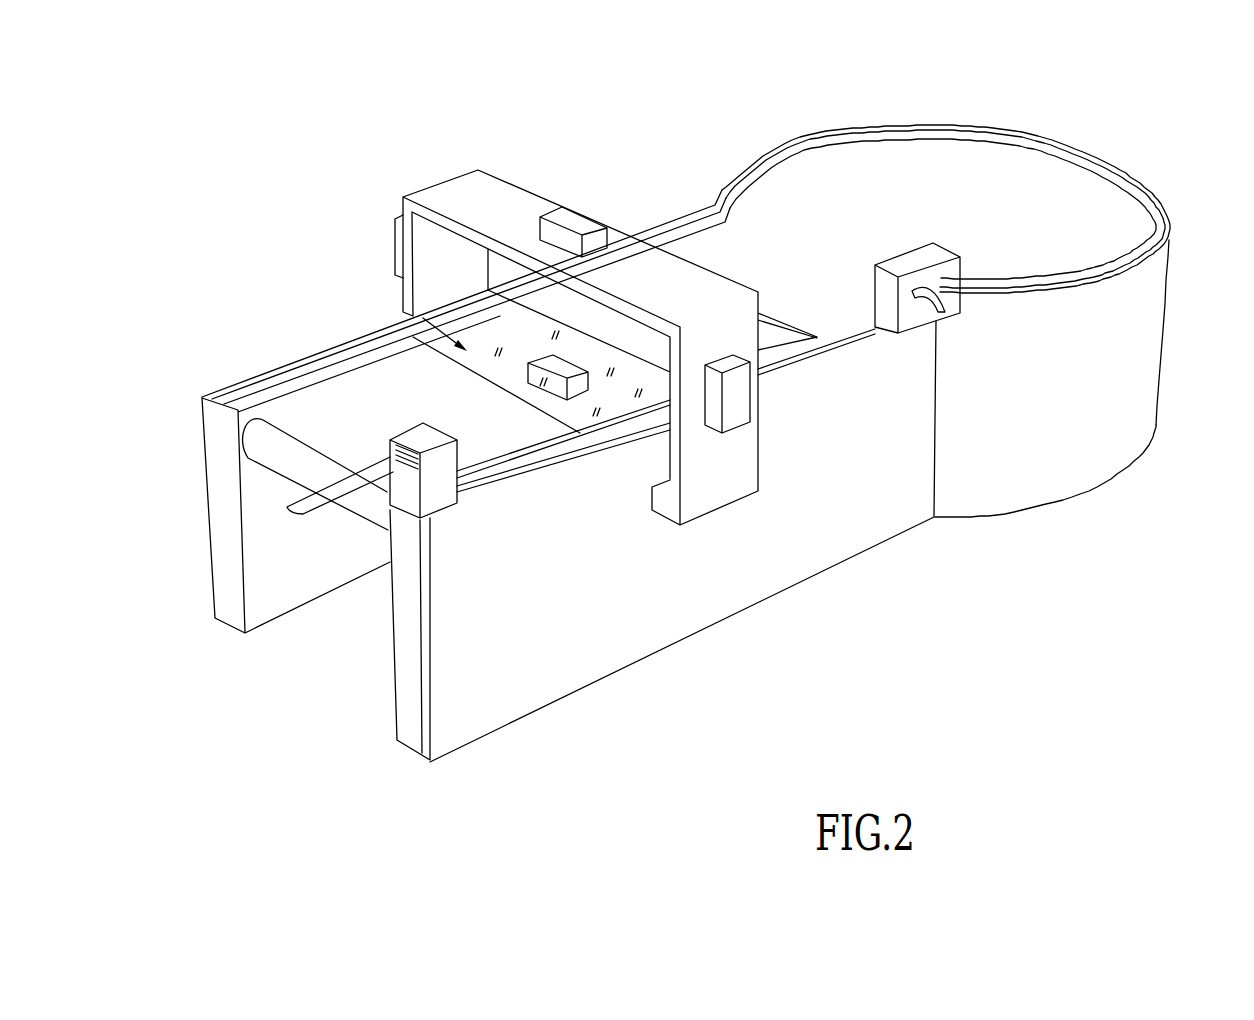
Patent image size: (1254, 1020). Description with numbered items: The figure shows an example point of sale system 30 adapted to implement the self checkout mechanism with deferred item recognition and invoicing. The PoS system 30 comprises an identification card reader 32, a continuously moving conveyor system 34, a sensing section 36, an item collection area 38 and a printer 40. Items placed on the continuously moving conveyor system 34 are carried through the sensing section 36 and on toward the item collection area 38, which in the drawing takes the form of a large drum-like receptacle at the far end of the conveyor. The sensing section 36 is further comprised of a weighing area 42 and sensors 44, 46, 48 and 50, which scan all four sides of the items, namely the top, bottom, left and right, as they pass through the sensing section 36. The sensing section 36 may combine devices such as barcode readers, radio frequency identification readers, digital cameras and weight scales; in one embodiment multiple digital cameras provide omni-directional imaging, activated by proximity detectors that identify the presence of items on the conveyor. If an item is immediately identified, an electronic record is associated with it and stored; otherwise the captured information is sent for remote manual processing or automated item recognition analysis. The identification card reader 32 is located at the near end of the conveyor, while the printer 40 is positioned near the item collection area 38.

The PoS system 30 is at (1092, 634).
The identification card reader 32 is at (430, 477).
The continuously moving conveyor system 34 is at (350, 407).
The sensing section 36 is at (458, 143).
The item collection area 38 is at (827, 173).
The printer 40 is at (888, 302).
The weighing area 42 is at (410, 314).
The sensor 44 is at (390, 247).
The sensor 46 is at (571, 216).
The sensor 48 is at (738, 403).
The sensor 50 is at (527, 371).